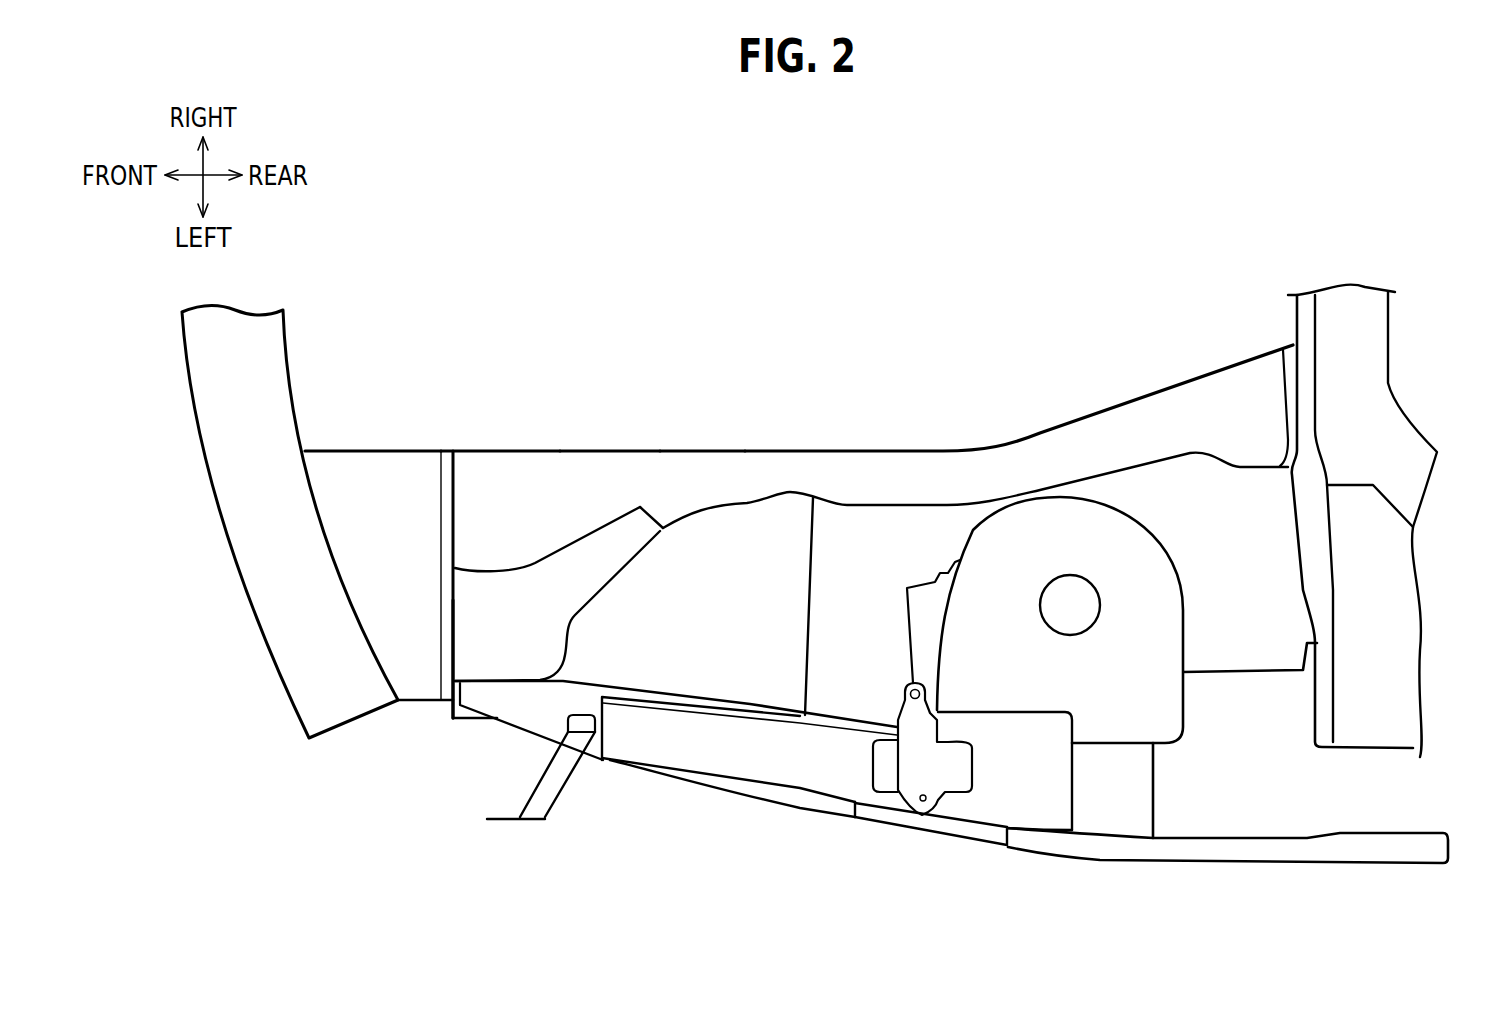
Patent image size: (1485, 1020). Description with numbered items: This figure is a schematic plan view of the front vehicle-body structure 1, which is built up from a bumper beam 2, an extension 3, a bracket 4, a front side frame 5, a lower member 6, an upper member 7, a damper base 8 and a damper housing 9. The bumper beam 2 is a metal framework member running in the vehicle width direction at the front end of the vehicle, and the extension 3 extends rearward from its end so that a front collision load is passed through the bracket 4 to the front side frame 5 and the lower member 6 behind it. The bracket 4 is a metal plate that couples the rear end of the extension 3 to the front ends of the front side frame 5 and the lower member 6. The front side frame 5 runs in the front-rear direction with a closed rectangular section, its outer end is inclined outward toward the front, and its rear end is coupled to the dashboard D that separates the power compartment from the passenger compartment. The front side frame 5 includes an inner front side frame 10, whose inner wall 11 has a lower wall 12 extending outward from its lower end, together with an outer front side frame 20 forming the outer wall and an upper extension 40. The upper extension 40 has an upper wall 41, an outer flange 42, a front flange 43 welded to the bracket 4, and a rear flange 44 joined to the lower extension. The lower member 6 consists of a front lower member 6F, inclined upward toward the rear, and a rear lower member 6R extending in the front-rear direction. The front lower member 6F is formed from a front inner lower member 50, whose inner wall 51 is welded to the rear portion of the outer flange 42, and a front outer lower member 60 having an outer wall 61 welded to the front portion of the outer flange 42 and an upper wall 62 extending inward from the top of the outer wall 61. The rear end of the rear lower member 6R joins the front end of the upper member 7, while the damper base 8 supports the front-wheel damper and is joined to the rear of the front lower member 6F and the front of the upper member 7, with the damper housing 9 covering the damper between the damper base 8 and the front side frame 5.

The front vehicle-body structure 1 is at (898, 361).
The bumper beam 2 is at (264, 542).
The extension 3 is at (370, 472).
The bracket 4 is at (446, 451).
The front side frame 5 is at (780, 472).
The lower member 6 is at (917, 851).
The front lower member 6F is at (797, 807).
The rear lower member 6R is at (898, 820).
The upper member 7 is at (1137, 793).
The damper base 8 is at (1147, 687).
The damper housing 9 is at (825, 617).
The inner front side frame 10 is at (515, 472).
The inner wall 11 is at (607, 447).
The lower wall 12 is at (700, 472).
The outer front side frame 20 is at (743, 508).
The upper extension 40 is at (580, 594).
The upper wall 41 is at (552, 600).
The outer flange 42 is at (492, 672).
The front flange 43 is at (462, 612).
The rear flange 44 is at (650, 547).
The front inner lower member 50 is at (676, 721).
The inner wall 51 is at (732, 700).
The front outer lower member 60 is at (671, 793).
The outer wall 61 is at (688, 797).
The upper wall 62 is at (712, 792).
The dashboard D is at (1303, 323).